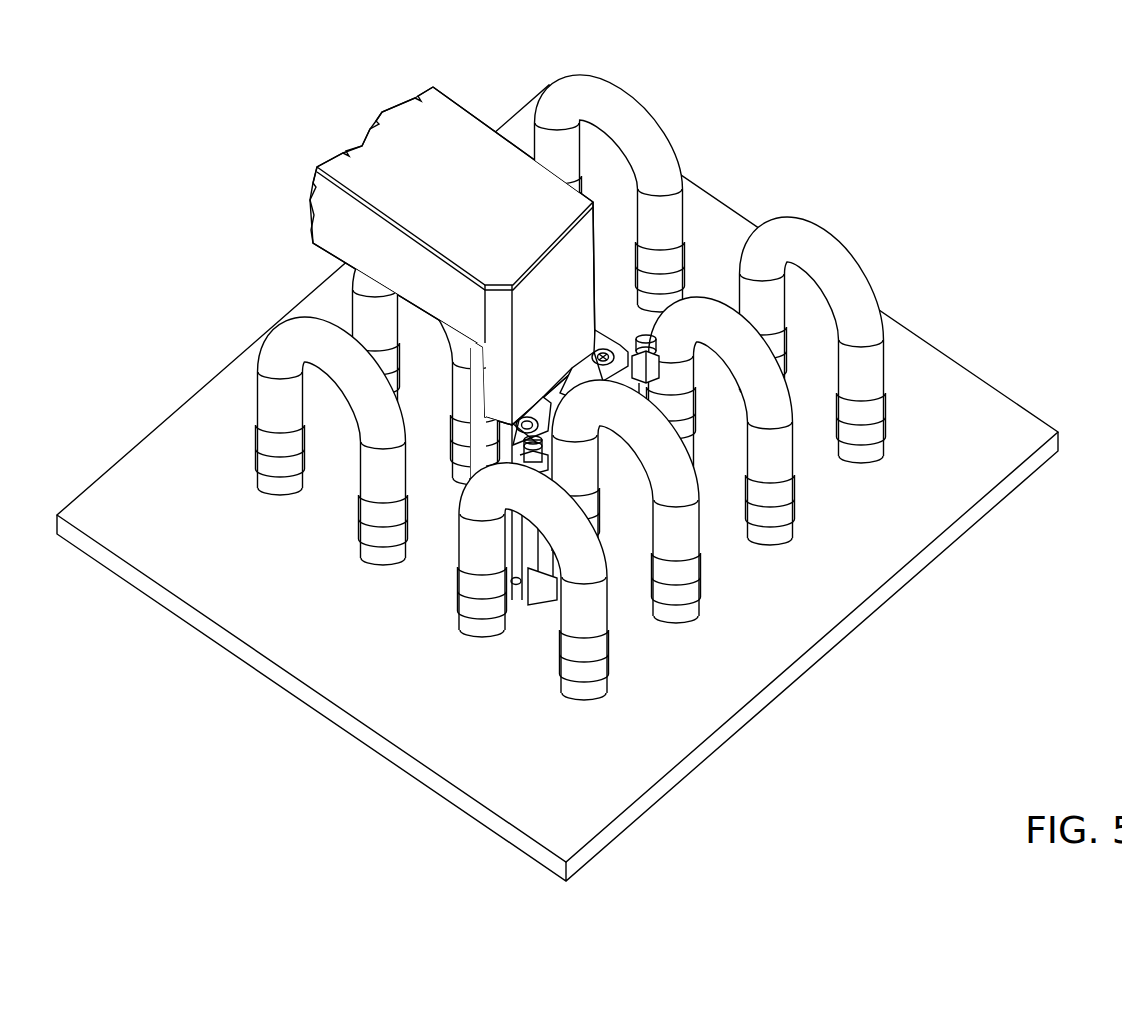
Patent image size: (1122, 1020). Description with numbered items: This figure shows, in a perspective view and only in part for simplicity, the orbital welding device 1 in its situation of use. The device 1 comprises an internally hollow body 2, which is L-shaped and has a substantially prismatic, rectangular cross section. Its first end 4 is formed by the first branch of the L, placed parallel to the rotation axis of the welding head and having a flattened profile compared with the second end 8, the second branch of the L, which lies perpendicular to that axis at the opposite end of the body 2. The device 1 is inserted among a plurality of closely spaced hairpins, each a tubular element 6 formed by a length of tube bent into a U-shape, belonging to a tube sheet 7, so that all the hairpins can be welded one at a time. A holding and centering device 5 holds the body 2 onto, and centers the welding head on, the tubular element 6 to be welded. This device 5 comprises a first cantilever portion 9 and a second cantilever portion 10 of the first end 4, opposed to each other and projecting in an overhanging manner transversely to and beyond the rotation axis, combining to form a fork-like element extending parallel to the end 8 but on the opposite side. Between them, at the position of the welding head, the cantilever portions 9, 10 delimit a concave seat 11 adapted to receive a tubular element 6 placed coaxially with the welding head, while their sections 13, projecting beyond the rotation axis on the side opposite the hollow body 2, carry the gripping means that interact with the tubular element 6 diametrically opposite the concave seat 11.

The orbital welding device 1 is at (479, 99).
The hollow body 2 is at (362, 160).
The first end 4 is at (540, 371).
The holding and centering device 5 is at (631, 590).
The tubular element 6 is at (571, 389).
The tube sheet 7 is at (1020, 426).
The second end 8 is at (333, 202).
The first cantilever portion 9 is at (487, 452).
The second cantilever portion 10 is at (652, 388).
The concave seat 11 is at (560, 383).
The sections 13 is at (600, 448).